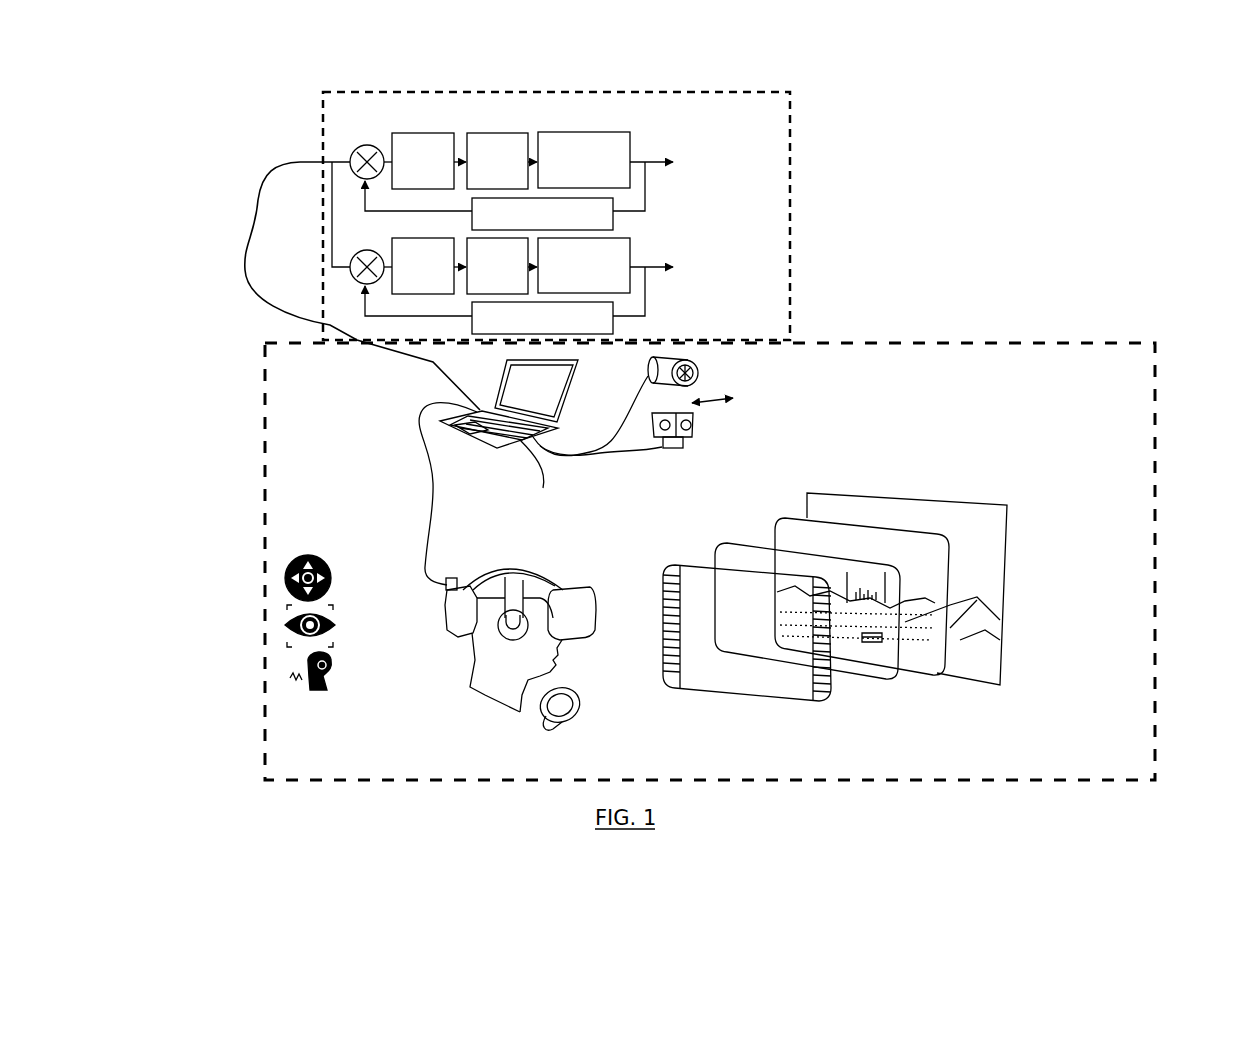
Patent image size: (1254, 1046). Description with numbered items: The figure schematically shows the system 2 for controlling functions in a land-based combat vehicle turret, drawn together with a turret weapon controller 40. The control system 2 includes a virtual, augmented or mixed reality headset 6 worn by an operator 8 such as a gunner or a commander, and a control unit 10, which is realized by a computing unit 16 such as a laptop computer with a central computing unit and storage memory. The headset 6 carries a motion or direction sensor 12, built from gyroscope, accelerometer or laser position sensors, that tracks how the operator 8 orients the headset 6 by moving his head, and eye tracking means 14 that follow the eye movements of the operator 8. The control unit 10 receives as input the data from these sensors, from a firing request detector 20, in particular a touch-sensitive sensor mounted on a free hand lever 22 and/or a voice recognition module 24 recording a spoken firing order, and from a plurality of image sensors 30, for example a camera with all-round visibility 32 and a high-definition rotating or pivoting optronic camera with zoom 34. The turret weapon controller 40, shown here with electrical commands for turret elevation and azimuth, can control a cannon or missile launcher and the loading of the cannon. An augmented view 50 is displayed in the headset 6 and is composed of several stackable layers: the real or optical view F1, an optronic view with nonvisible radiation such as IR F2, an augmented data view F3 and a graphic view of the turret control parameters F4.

The control system 2 is at (1005, 328).
The turret weapon controller 40 is at (815, 235).
The control unit 10 is at (502, 458).
The computing unit 16 is at (543, 482).
The plurality of image sensors 30 is at (739, 402).
The camera with 360° visibility 32 is at (685, 413).
The high-definition rotating and/or pivoting optronic camera with zoom 34 is at (697, 362).
The virtual reality headset 6 is at (575, 586).
The operator 8 is at (472, 662).
The motion or direction sensor 12 is at (275, 580).
The eye tracking means 14 is at (287, 628).
The voice recognition module 24 is at (293, 670).
The firing request detector 20 is at (525, 719).
The free hand lever 22 is at (577, 725).
The augmented view 50 is at (826, 488).
The real or optical view F1 is at (983, 577).
The optronic view F2 is at (915, 670).
The augmented data view F3 is at (848, 672).
The graphic view of the turret control parameters F4 is at (758, 692).